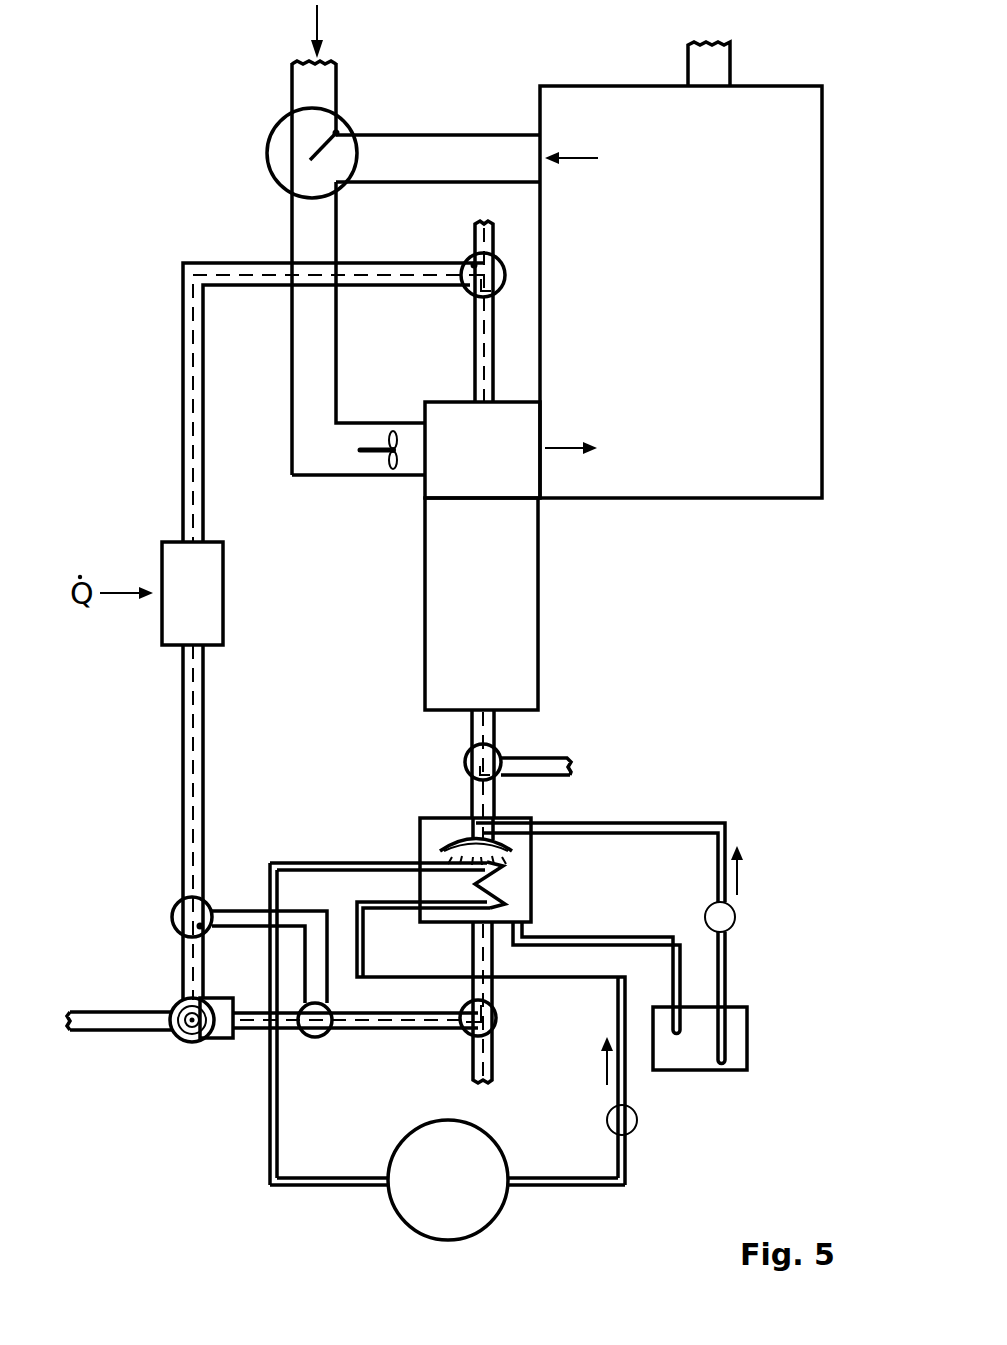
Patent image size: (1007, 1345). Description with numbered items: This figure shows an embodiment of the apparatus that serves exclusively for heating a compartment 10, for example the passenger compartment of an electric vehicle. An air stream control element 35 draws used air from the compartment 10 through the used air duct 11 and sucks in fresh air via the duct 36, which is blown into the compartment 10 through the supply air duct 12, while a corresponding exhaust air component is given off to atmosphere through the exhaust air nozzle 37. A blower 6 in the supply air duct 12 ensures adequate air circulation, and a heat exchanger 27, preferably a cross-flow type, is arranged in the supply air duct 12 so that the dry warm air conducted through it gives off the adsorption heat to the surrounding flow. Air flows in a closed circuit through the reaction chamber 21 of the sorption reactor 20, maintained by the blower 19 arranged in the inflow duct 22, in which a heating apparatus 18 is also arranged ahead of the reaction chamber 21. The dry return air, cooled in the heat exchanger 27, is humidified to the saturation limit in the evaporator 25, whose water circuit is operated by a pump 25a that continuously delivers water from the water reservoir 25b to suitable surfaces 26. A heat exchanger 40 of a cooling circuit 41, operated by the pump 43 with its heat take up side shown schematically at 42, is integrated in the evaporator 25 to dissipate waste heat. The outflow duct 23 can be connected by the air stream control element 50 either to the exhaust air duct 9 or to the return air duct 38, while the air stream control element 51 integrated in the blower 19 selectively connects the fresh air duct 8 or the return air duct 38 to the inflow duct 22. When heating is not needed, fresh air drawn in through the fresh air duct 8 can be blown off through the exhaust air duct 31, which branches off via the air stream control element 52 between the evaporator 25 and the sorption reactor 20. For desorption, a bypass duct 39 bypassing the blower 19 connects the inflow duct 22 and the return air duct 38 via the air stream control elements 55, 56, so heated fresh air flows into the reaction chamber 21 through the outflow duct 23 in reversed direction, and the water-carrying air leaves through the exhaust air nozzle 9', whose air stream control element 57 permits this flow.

The duct 36 is at (326, 85).
The air stream control element 35 is at (338, 131).
The used air duct 11 is at (465, 147).
The compartment 10 is at (690, 319).
The exhaust air nozzle 37 is at (718, 67).
The exhaust air duct 9 is at (474, 293).
The outflow duct 23 is at (475, 337).
The air stream control element 50 is at (468, 258).
The return air duct 38 is at (183, 407).
The heating apparatus 18 is at (207, 599).
The heat exchanger 27 is at (496, 473).
The supply air duct 12 is at (325, 462).
The blower 6 is at (395, 475).
The reaction chamber 21 is at (495, 611).
The sorption reactor 20 is at (540, 606).
The inflow duct 22 is at (493, 723).
The air stream control element 52 is at (464, 762).
The exhaust air duct 31 is at (552, 762).
The evaporator 25 is at (525, 820).
The surfaces 26 is at (460, 847).
The heat exchanger 40 is at (452, 887).
The pump 25a is at (736, 915).
The water reservoir 25b is at (737, 1057).
The cooling circuit 41 is at (315, 1188).
The heat take up side 42 is at (473, 1217).
The pump 43 is at (638, 1120).
The bypass duct 39 is at (240, 912).
The air stream control element 56 is at (173, 908).
The air stream control element 55 is at (330, 1010).
The air stream control element 57 is at (497, 1020).
The exhaust air nozzle 9' is at (510, 1089).
The fresh air duct 8 is at (102, 1022).
The blower 19 is at (185, 1040).
The air stream control element 51 is at (198, 1040).